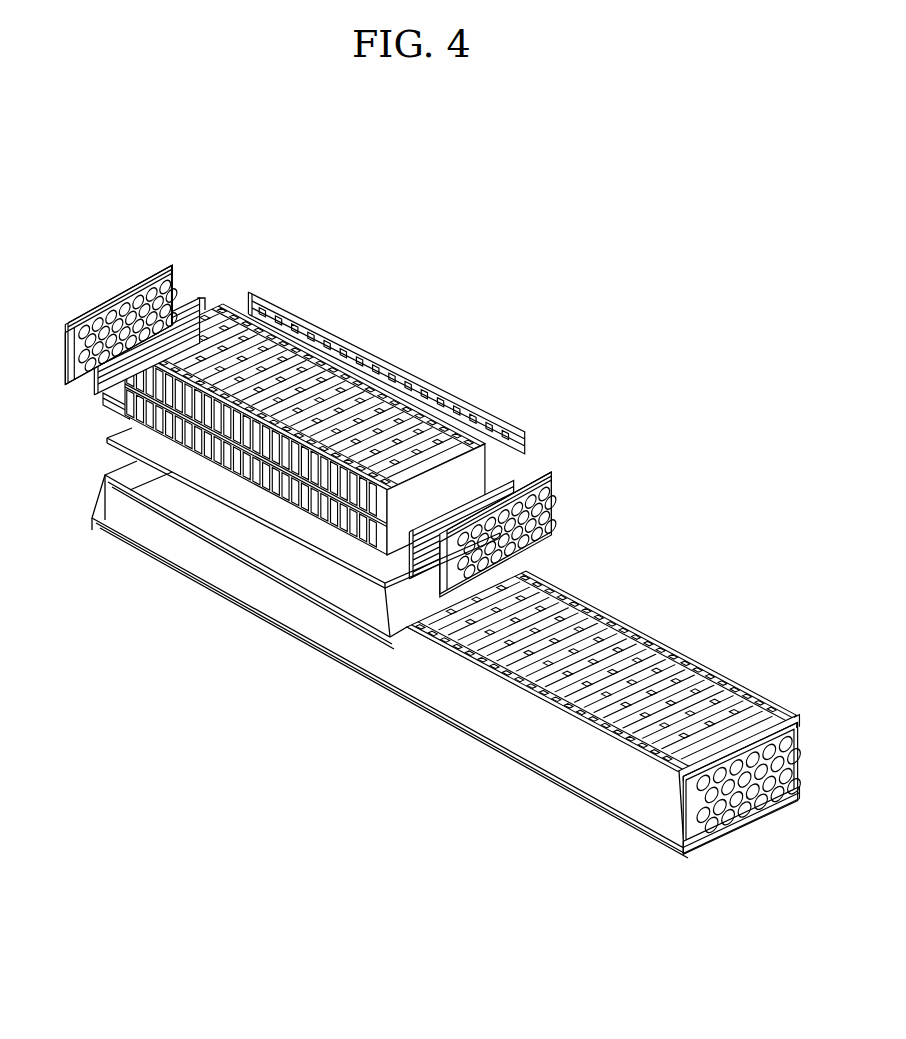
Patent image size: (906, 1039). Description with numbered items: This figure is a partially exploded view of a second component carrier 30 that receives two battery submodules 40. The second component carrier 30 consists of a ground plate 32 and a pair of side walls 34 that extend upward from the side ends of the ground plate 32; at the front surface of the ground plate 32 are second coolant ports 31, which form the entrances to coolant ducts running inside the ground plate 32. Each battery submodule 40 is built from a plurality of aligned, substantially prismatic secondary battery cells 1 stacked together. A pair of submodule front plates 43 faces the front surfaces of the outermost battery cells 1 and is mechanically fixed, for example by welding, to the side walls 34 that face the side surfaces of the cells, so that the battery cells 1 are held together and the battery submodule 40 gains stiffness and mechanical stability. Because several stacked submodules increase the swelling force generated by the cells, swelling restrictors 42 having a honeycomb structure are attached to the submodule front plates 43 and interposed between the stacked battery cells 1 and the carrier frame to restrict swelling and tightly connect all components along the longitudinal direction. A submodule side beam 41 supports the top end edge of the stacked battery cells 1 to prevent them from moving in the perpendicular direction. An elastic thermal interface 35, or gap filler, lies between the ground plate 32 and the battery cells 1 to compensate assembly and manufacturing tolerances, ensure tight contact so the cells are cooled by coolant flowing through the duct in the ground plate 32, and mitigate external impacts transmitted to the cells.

The battery cell 1 is at (300, 325).
The second component carrier 30 is at (420, 662).
The second coolant port 31 is at (776, 790).
The ground plate 32 is at (357, 587).
The side wall 34 is at (105, 490).
The thermal interface 35 is at (127, 440).
The battery submodule 40 is at (633, 634).
The submodule side beam 41 is at (452, 382).
The swelling restrictor 42 is at (122, 294).
The submodule front plate 43 is at (84, 396).